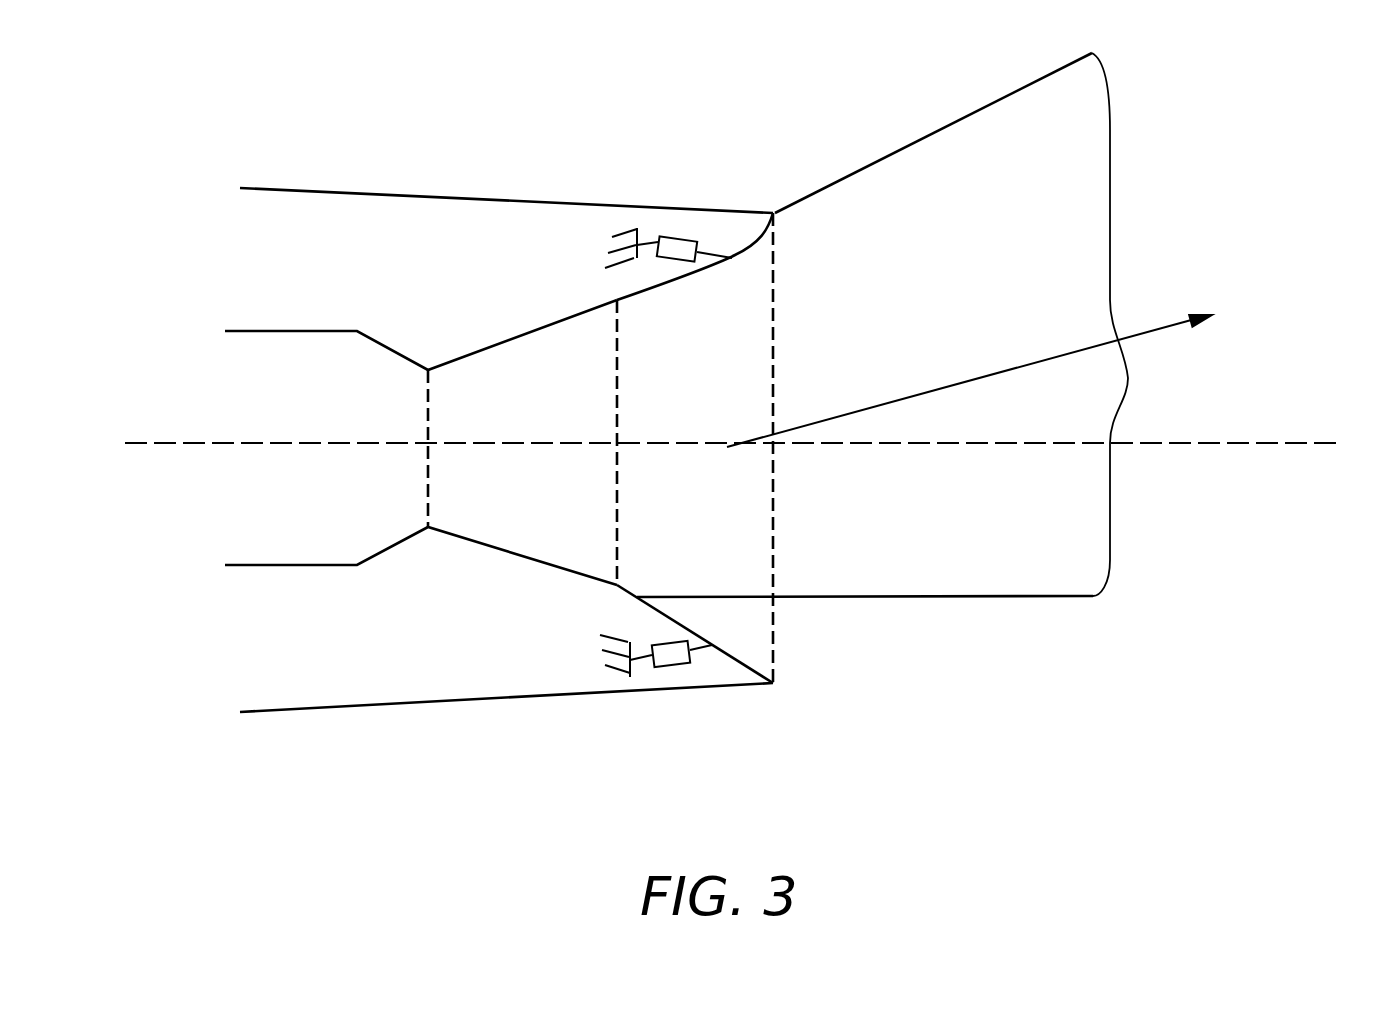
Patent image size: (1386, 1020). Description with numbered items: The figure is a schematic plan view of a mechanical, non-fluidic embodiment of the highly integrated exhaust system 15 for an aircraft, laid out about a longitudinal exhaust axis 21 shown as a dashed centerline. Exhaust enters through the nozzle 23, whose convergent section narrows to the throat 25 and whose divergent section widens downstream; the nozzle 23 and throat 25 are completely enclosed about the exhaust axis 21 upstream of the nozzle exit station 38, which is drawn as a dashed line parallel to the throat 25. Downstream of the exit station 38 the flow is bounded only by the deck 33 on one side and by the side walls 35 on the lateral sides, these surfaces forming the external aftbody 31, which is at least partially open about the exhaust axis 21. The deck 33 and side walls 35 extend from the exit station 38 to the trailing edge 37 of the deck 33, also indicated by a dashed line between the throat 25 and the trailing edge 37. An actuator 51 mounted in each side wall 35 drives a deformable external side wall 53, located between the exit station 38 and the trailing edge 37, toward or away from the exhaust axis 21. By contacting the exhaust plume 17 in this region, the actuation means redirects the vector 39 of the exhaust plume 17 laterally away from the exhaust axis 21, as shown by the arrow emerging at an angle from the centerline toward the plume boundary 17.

The highly integrated exhaust system 15 is at (1262, 103).
The exhaust plume 17 is at (1128, 324).
The exhaust axis 21 is at (205, 443).
The nozzle 23 is at (617, 300).
The throat 25 is at (425, 398).
The external aftbody 31 is at (450, 195).
The deck 33 is at (750, 573).
The side walls 35 is at (647, 300).
The trailing edge 37 is at (773, 378).
The nozzle exit station 38 is at (617, 478).
The vector 39 is at (993, 371).
The actuator 51 is at (666, 237).
The deformable external side walls 53 is at (753, 233).